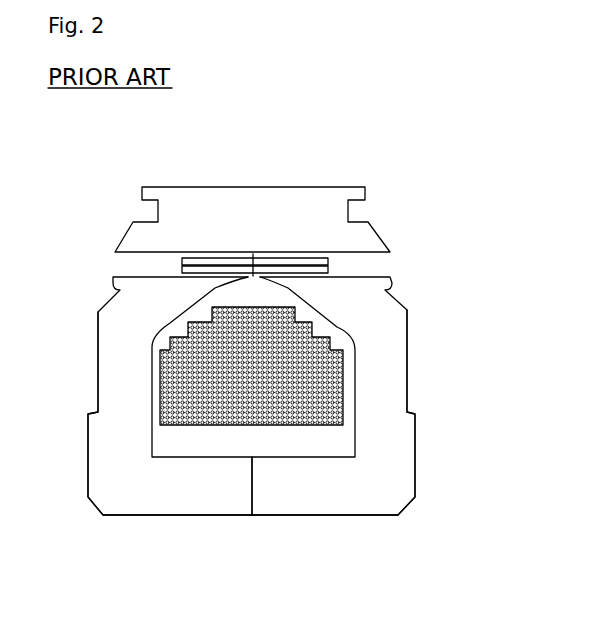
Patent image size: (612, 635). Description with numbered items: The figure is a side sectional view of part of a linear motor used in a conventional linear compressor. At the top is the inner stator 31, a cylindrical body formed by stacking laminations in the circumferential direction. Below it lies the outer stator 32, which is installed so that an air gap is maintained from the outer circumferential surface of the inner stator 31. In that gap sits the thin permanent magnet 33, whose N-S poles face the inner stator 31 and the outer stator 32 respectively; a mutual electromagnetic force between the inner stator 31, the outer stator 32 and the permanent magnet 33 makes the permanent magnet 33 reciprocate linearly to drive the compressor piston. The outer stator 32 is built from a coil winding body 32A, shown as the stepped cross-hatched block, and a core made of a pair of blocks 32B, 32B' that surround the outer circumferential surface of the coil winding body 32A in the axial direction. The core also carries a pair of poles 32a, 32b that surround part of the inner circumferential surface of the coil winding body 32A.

The inner stator 31 is at (138, 235).
The permanent magnet 33 is at (182, 262).
The outer stator 32 is at (118, 520).
The pole 32a is at (125, 321).
The pole 32b is at (392, 328).
The coil winding body 32A is at (318, 423).
The core block 32B is at (202, 425).
The core block 32B' is at (303, 424).